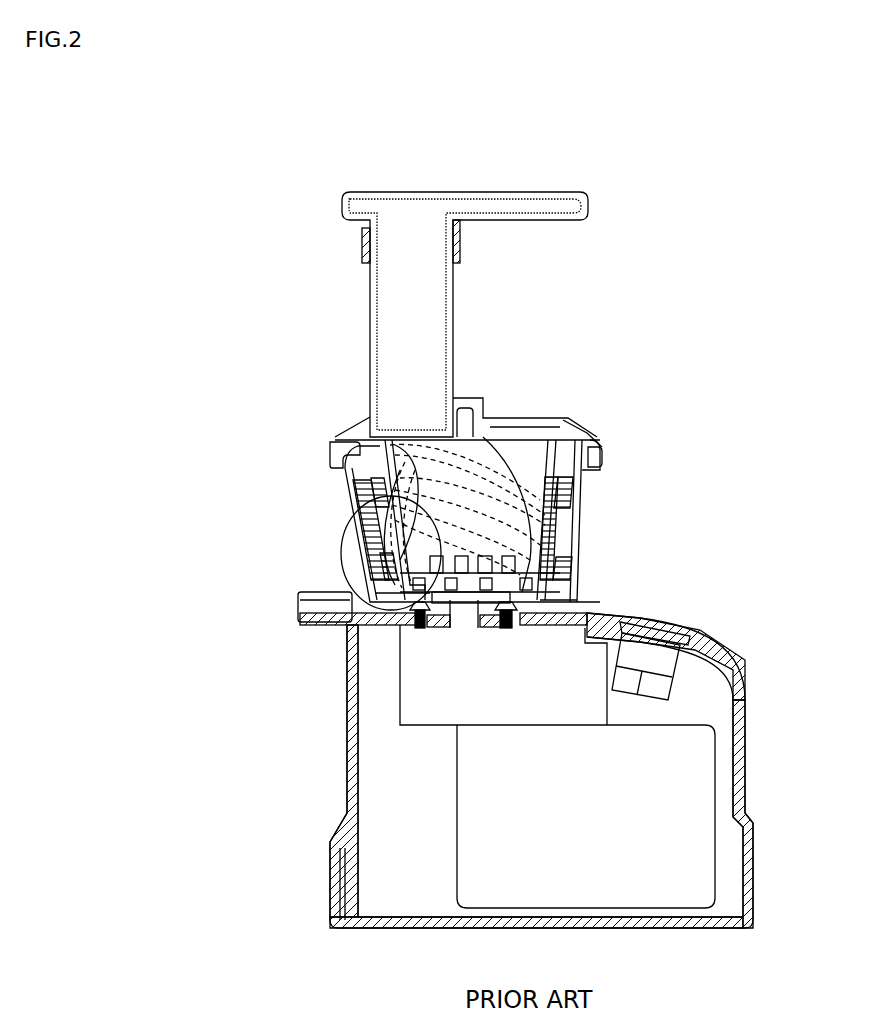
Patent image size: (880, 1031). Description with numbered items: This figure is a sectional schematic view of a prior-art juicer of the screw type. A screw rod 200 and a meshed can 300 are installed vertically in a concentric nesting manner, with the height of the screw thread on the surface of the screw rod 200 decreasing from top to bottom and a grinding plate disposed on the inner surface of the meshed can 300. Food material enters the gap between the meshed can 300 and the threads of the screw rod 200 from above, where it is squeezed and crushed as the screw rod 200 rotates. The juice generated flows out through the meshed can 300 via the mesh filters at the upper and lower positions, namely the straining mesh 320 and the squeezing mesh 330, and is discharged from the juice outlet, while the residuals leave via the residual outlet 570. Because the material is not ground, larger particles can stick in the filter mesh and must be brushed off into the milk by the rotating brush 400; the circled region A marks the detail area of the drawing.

The screw rod 200 is at (425, 478).
The meshed can 300 is at (573, 507).
The straining mesh 320 is at (597, 445).
The squeezing mesh 330 is at (575, 537).
The rotating brush 400 is at (365, 494).
The residual outlet 570 is at (345, 603).
The detail region A is at (345, 535).